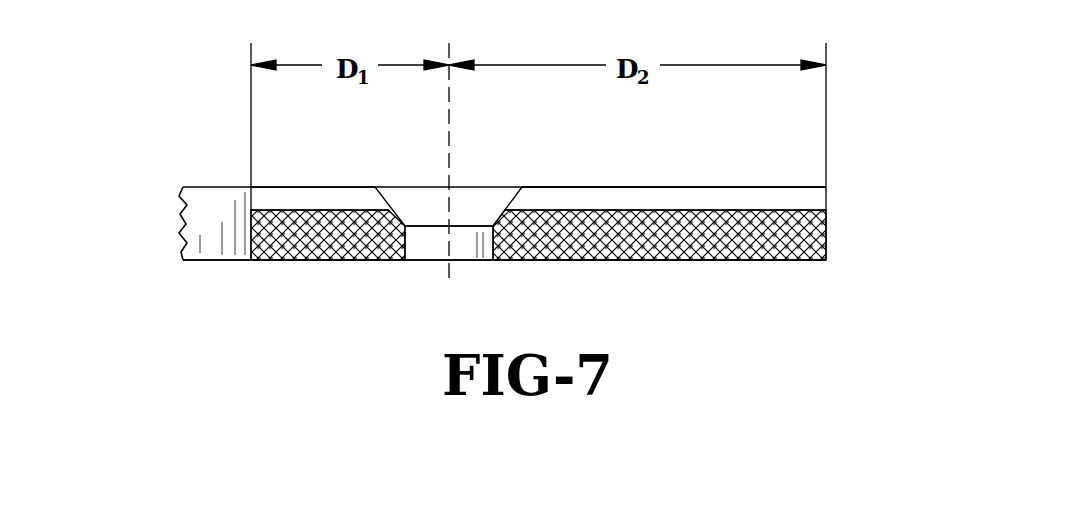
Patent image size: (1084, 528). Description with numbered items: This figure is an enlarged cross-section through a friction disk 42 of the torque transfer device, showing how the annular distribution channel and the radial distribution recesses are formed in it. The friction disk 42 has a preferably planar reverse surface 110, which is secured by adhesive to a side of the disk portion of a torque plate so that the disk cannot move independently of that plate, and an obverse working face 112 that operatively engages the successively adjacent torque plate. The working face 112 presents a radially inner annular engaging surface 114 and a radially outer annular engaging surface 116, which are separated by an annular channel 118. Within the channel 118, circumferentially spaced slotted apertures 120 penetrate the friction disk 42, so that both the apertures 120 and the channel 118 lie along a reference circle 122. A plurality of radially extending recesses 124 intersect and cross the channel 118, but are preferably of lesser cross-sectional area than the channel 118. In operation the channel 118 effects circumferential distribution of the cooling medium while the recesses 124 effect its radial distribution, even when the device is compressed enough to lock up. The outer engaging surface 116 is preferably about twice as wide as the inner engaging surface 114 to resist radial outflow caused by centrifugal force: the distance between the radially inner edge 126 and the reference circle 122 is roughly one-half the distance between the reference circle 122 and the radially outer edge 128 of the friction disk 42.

The friction disk 42 is at (843, 198).
The reverse surface 110 is at (782, 262).
The obverse working face 112 is at (708, 188).
The radially inner annular engaging surface 114 is at (301, 186).
The radially outer annular engaging surface 116 is at (582, 186).
The annular channel 118 is at (468, 203).
The slotted apertures 120 is at (427, 242).
The reference circle 122 is at (449, 131).
The radially extending recesses 124 is at (763, 201).
The radially inner edge 126 is at (251, 228).
The radially outer edge 128 is at (826, 238).